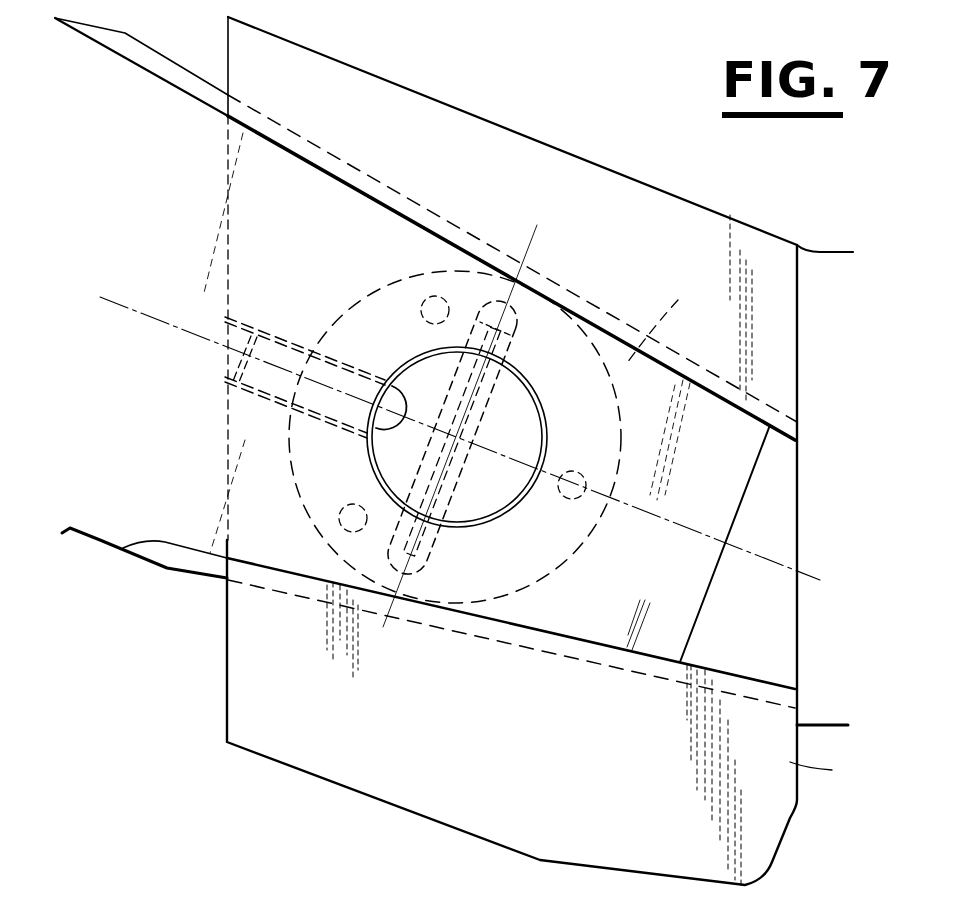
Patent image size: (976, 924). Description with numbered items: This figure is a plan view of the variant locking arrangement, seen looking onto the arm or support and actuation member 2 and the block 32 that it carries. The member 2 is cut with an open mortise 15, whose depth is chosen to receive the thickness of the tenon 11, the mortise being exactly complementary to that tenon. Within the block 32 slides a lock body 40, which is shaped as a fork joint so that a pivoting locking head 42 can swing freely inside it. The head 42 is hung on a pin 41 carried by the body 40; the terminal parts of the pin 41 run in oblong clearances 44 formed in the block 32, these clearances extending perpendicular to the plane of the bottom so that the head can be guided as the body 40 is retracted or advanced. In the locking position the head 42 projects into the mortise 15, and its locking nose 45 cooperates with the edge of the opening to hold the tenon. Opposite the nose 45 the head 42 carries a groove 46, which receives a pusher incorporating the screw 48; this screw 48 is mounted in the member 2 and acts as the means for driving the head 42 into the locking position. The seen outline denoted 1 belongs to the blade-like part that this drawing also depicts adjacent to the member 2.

The blade 1 is at (127, 515).
The support and actuation member 2 is at (822, 768).
The tenon 11 is at (688, 612).
The open mortise 15 is at (762, 650).
The block 32 is at (669, 316).
The lock body 40 is at (492, 500).
The pin 41 is at (515, 355).
The locking head 42 is at (400, 438).
The oblong clearances 44 is at (525, 292).
The locking nose 45 is at (540, 452).
The groove 46 is at (408, 362).
The screw 48 is at (282, 342).